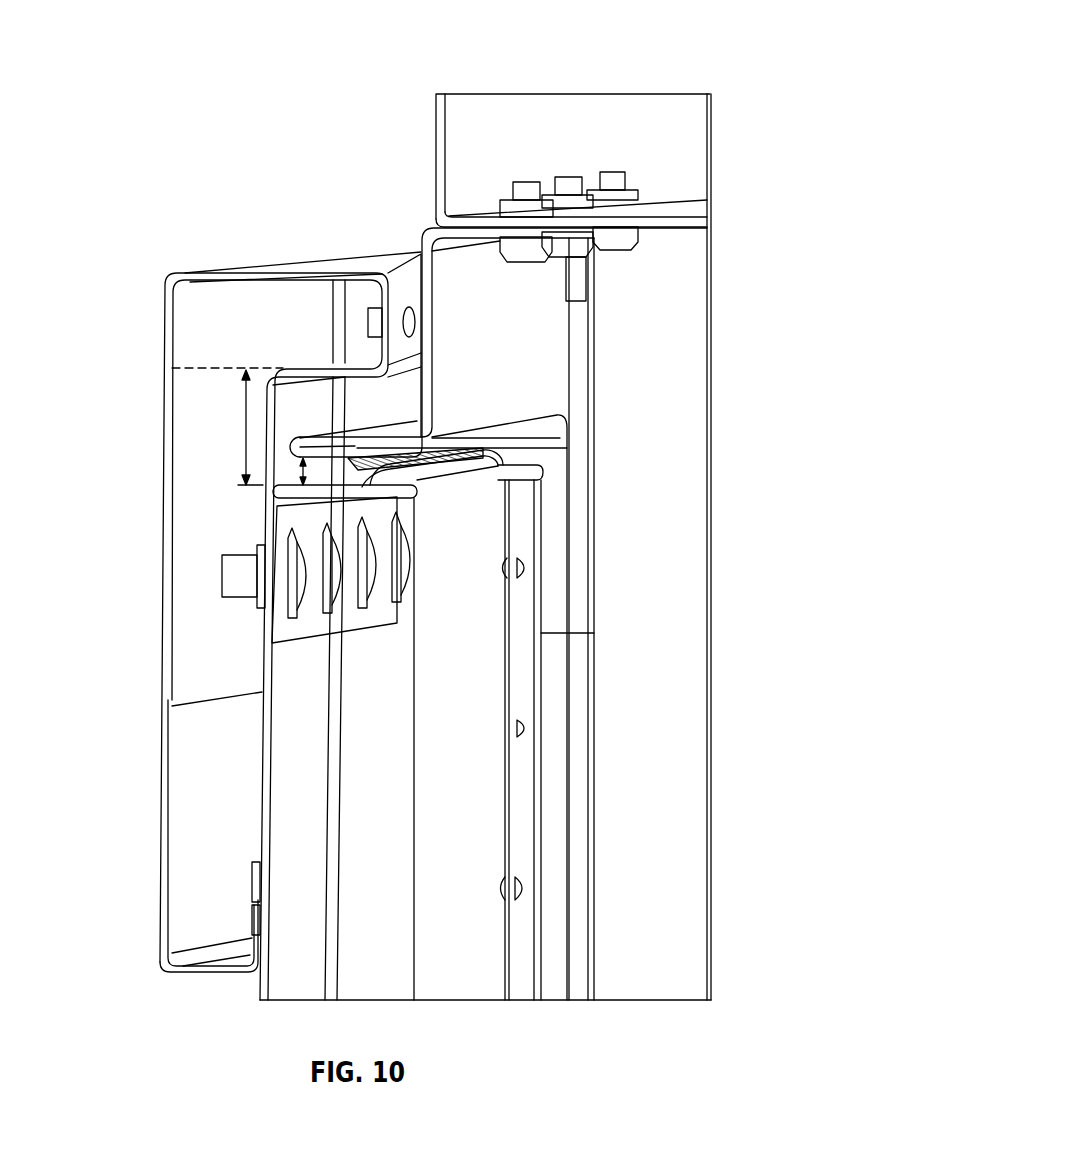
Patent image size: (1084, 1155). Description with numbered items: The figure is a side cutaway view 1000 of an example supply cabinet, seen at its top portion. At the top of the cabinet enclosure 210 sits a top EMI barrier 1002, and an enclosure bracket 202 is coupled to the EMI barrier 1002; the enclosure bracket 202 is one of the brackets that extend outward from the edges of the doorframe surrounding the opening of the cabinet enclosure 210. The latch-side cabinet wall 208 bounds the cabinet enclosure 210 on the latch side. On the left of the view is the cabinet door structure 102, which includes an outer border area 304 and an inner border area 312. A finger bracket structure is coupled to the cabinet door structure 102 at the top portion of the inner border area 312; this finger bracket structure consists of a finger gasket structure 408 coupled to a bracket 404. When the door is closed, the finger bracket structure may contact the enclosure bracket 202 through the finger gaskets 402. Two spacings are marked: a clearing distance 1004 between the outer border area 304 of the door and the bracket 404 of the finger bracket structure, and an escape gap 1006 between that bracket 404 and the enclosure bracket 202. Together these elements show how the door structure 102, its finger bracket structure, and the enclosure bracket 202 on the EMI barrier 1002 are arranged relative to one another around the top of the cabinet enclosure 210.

The cutaway view 1000 is at (644, 44).
The top EMI barrier 1002 is at (703, 206).
The cabinet door structure 102 is at (236, 264).
The enclosure bracket 202 is at (428, 236).
The latch-side cabinet wall 208 is at (663, 794).
The cabinet enclosure 210 is at (686, 378).
The outer border area 304 is at (272, 343).
The inner border area 312 is at (245, 657).
The finger gaskets 402 is at (348, 468).
The bracket 404 is at (307, 625).
The finger gasket structure 408 is at (542, 474).
The clearing distance 1004 is at (243, 427).
The escape gap 1006 is at (298, 490).